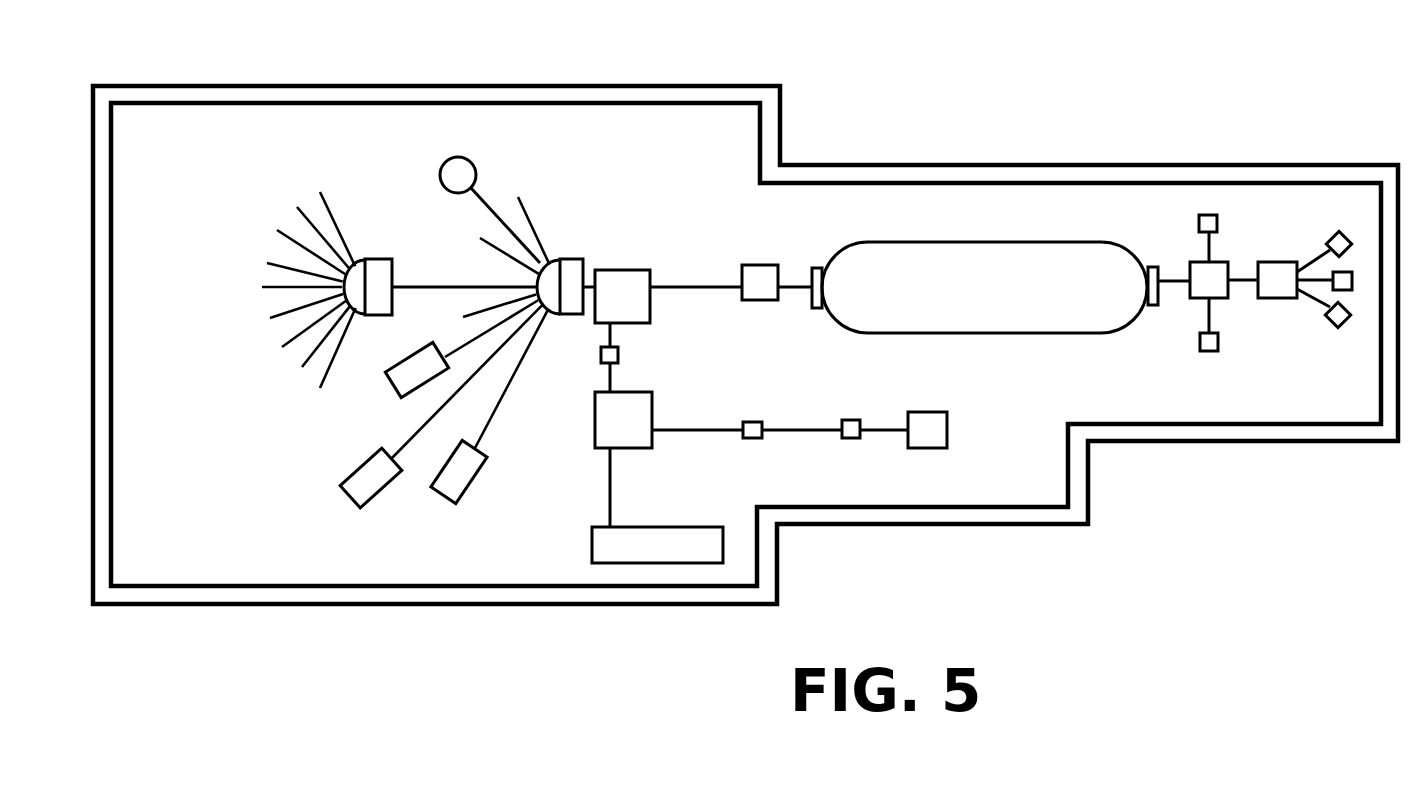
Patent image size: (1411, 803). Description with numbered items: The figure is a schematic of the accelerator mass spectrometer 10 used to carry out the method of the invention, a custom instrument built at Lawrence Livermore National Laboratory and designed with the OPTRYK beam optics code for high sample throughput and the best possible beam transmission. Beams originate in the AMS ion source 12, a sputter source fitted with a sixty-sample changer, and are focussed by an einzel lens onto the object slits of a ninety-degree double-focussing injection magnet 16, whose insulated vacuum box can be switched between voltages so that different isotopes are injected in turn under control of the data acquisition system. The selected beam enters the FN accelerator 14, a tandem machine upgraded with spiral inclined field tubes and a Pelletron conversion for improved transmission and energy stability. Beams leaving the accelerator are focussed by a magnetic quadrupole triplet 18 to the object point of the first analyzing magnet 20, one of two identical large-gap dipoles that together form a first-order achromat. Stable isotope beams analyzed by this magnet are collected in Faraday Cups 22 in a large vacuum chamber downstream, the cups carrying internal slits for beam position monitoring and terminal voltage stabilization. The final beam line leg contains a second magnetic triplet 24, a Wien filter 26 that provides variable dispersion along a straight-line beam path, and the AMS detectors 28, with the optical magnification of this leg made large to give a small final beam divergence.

The spectrometer 10 is at (903, 122).
The AMS ion source 12 is at (1217, 222).
The FN accelerator 14 is at (1000, 298).
The injection magnet 16 is at (1197, 263).
The magnetic quadrupole triplet 18 is at (762, 265).
The first analyzing magnet 20 is at (627, 270).
The Faraday Cups 22 is at (618, 353).
The second magnetic triplet 24 is at (753, 422).
The Wien filter 26 is at (853, 420).
The AMS detectors 28 is at (947, 422).